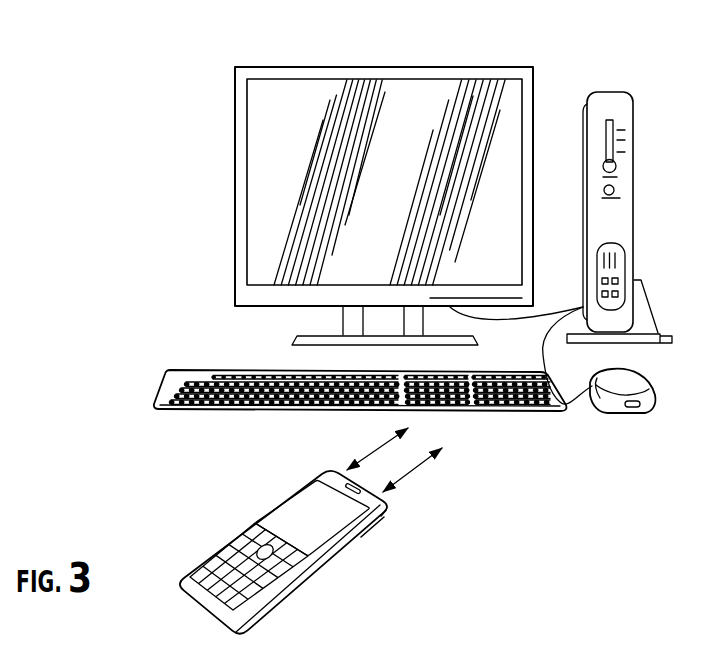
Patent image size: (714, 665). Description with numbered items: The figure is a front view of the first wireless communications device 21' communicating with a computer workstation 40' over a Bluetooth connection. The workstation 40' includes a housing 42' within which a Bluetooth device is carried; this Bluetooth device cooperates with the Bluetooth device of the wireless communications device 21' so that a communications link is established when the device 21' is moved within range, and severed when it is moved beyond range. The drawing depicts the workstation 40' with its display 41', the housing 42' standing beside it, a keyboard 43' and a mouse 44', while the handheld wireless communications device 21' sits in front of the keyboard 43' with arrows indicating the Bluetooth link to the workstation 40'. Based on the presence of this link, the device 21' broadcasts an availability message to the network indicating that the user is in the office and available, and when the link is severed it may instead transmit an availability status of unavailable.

The workstation 40' is at (420, 253).
The display monitor 41' is at (357, 206).
The housing 42' is at (568, 192).
The keyboard 43' is at (372, 427).
The mouse 44' is at (610, 406).
The first wireless communications device 21' is at (323, 531).